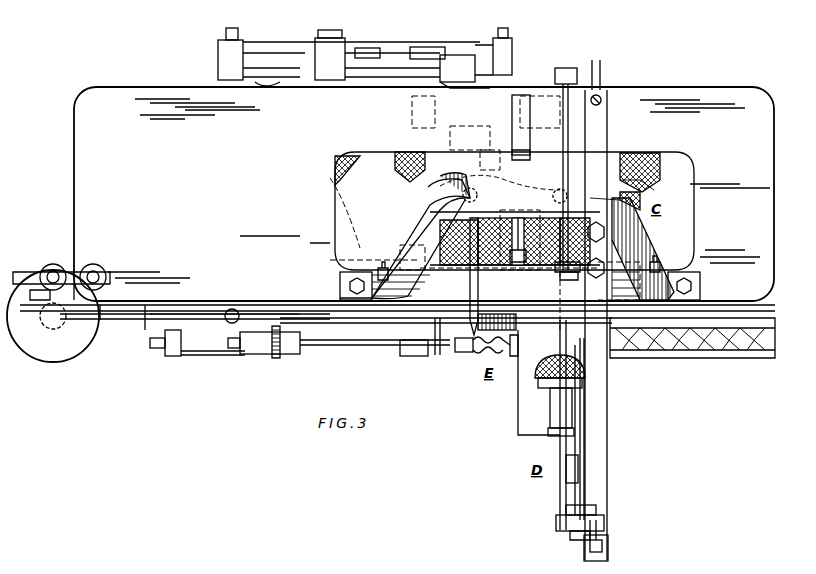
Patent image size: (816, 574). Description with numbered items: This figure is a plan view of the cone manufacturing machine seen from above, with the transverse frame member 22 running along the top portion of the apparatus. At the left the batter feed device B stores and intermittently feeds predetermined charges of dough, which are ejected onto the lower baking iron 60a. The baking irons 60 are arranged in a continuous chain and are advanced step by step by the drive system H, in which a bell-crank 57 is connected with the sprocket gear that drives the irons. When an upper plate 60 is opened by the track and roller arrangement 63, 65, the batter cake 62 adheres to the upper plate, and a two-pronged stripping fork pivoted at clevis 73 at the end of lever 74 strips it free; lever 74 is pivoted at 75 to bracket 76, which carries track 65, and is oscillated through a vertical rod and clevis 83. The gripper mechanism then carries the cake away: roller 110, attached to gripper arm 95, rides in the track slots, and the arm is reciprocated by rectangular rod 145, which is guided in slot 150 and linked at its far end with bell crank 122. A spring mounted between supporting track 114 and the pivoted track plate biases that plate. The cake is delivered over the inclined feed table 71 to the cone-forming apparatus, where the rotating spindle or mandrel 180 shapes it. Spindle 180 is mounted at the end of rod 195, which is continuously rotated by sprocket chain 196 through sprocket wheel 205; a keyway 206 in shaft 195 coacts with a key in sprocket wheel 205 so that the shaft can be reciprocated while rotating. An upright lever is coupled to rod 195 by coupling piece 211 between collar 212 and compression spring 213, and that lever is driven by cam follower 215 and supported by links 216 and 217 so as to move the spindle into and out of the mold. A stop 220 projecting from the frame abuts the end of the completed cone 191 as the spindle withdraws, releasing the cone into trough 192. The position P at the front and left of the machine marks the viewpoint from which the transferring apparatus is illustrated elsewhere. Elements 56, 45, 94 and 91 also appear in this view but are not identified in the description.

The transverse frame member 22 is at (706, 96).
The bracket arm 56 is at (430, 48).
The bell-crank 57 is at (267, 81).
The drive system H is at (365, 58).
The clevis 83 is at (572, 80).
The lever 74 is at (568, 110).
The baking irons 60 is at (612, 152).
The roller arrangement 63 is at (462, 188).
The bracket 76 is at (643, 188).
The pivot 75 is at (600, 196).
The track 65 is at (412, 230).
The supporting track 114 is at (612, 238).
The lower baking iron 60a is at (510, 262).
The clevis 73 is at (572, 280).
The coupling piece 211 is at (470, 278).
The batter feed device B is at (58, 313).
The shaft 45 is at (228, 322).
The supporting link 217 is at (165, 348).
The supporting link 216 is at (216, 356).
The sprocket wheel 205 is at (272, 354).
The sprocket chain 196 is at (278, 358).
The keyway 206 is at (352, 336).
The spindle shaft 195 is at (345, 347).
The cam follower 215 is at (412, 356).
The stop 220 is at (437, 355).
The collar 212 is at (465, 352).
The compression spring 213 is at (488, 352).
The spindle 180 is at (512, 356).
The batter cake 62 is at (538, 368).
The feed table 71 is at (530, 415).
The roller 110 is at (562, 430).
The gripper arm 95 is at (566, 444).
The slot 150 is at (598, 456).
The slide 94 is at (572, 478).
The bell crank 122 is at (594, 508).
The rod 145 is at (600, 528).
The foot 91 is at (608, 548).
The sugar cone 191 is at (698, 350).
The trough 192 is at (750, 352).
The viewing position P is at (205, 481).